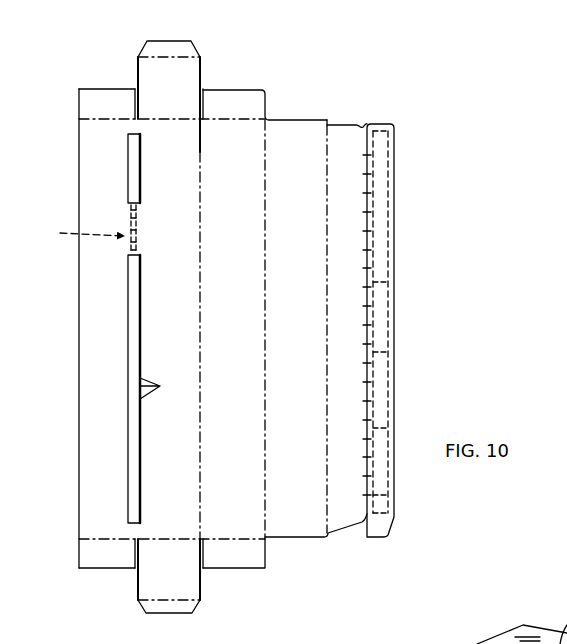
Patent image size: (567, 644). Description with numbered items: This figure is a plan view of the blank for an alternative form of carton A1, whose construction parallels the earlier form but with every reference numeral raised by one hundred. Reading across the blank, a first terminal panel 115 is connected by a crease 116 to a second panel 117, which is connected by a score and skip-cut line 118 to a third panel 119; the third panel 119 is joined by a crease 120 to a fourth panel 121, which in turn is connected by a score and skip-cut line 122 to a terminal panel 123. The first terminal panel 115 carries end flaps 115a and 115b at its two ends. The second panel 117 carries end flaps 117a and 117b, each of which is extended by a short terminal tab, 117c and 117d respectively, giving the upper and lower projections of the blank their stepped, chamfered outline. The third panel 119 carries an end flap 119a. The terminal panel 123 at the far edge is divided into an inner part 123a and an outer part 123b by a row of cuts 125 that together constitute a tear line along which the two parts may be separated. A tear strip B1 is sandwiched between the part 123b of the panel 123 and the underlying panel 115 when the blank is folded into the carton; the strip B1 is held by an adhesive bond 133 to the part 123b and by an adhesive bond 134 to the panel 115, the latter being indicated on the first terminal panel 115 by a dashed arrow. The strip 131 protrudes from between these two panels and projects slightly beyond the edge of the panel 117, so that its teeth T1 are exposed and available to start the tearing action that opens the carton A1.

The first terminal panel 115 is at (107, 298).
The end flap 115a is at (115, 103).
The end flap 115b is at (108, 555).
The crease 116 is at (135, 226).
The second panel 117 is at (177, 298).
The end flap 117a is at (185, 85).
The end flap 117b is at (182, 578).
The short terminal tab 117c is at (185, 51).
The short terminal tab 117d is at (180, 607).
The score and skip-cut line 118 is at (199, 348).
The third panel 119 is at (236, 298).
The end flap 119a is at (252, 113).
The crease 120 is at (265, 355).
The fourth panel 121 is at (300, 298).
The score and skip-cut line 122 is at (327, 402).
The terminal panel 123 is at (356, 298).
The inner part 123a is at (346, 133).
The outer part 123b is at (388, 158).
The cuts 125 is at (365, 193).
The strip 131 is at (140, 456).
The adhesive bond 133 is at (387, 342).
The adhesive bond 134 is at (73, 234).
The carton A1 is at (270, 90).
The tear strip B1 is at (135, 328).
The teeth T1 is at (161, 388).